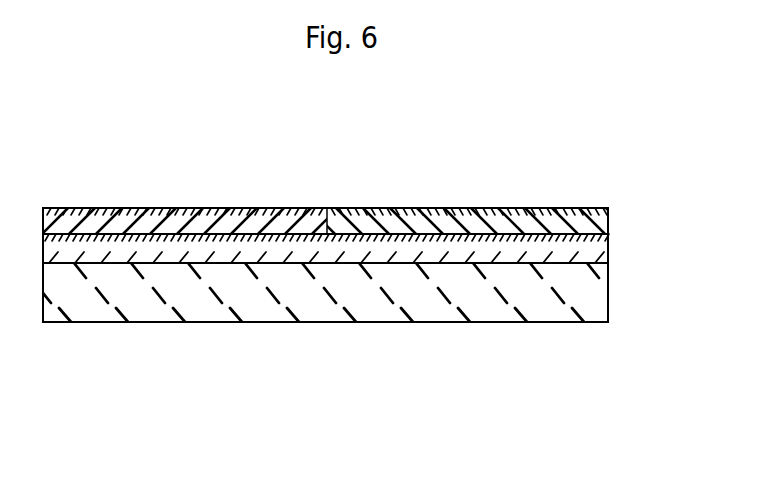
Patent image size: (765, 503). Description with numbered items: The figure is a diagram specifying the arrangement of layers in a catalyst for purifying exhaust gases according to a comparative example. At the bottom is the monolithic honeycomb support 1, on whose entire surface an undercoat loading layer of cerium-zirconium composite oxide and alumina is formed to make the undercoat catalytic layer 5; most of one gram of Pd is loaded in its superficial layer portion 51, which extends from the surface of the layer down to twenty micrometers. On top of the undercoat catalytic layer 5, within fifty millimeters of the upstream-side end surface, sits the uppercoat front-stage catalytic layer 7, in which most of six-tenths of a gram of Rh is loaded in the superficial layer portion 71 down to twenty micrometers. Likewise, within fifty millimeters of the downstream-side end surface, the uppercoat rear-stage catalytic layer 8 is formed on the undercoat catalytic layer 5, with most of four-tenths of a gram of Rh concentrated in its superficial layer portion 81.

The monolithic honeycomb support 1 is at (317, 302).
The undercoat catalytic layer 5 is at (592, 250).
The superficial layer portion 51 is at (557, 238).
The uppercoat front-stage catalytic layer 7 is at (144, 222).
The superficial layer portion 71 is at (232, 212).
The uppercoat rear-stage catalytic layer 8 is at (463, 222).
The superficial layer portion 81 is at (387, 212).